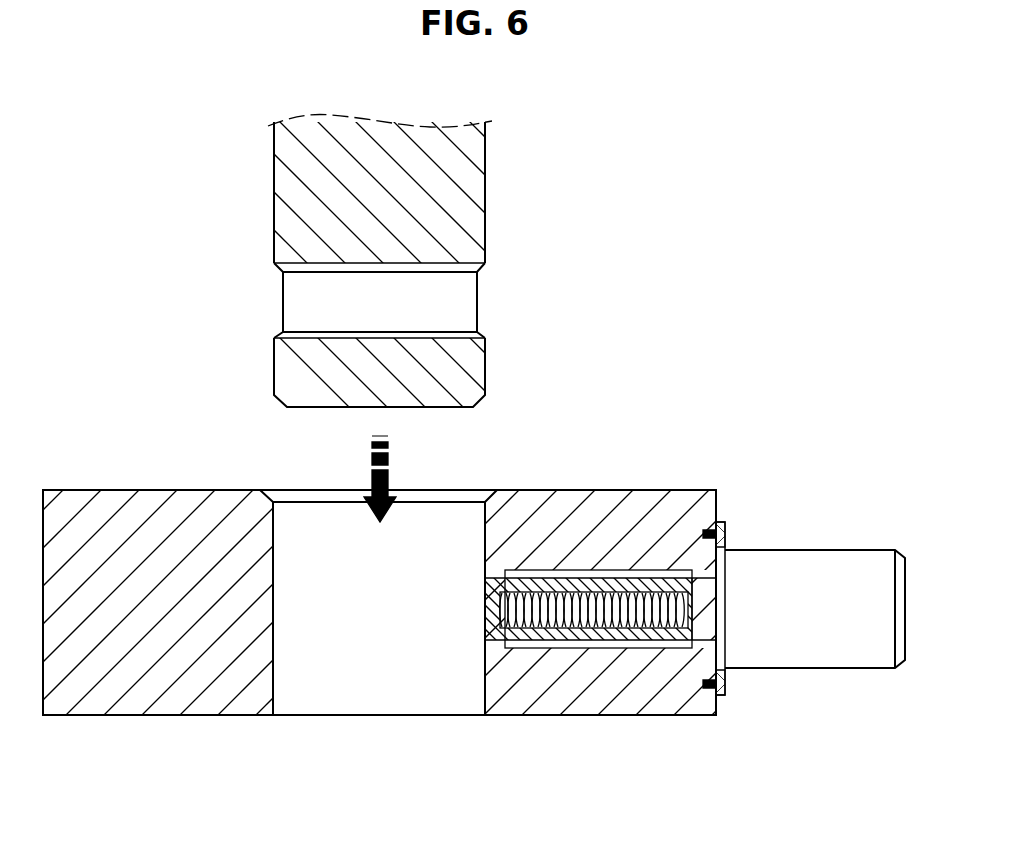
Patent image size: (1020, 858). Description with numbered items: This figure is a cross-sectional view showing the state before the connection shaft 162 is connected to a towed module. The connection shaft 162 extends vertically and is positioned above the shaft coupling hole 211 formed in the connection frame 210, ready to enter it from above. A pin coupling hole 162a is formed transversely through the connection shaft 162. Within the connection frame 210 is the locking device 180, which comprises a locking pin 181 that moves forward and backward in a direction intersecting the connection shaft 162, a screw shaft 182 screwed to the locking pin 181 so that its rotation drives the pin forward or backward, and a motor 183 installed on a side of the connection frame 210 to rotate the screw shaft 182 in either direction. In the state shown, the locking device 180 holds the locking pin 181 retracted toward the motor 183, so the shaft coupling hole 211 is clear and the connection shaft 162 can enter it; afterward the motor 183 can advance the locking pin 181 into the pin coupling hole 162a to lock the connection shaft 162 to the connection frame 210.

The connection shaft 162 is at (473, 183).
The pin coupling hole 162a is at (536, 317).
The locking device 180 is at (797, 516).
The locking pin 181 is at (580, 583).
The screw shaft 182 is at (608, 627).
The motor 183 is at (823, 655).
The connection frame 210 is at (150, 507).
The shaft coupling hole 211 is at (275, 655).